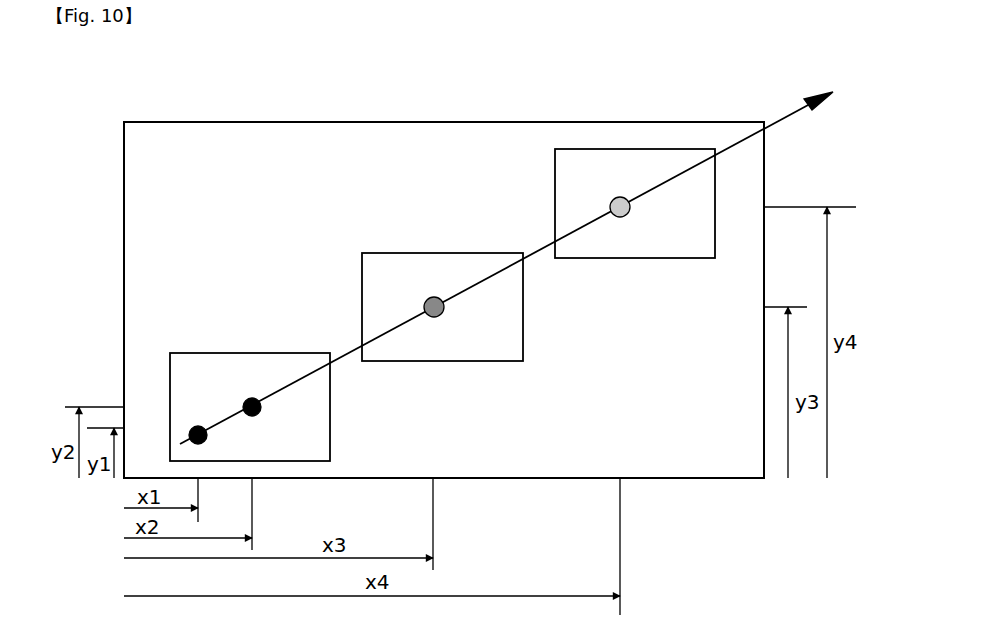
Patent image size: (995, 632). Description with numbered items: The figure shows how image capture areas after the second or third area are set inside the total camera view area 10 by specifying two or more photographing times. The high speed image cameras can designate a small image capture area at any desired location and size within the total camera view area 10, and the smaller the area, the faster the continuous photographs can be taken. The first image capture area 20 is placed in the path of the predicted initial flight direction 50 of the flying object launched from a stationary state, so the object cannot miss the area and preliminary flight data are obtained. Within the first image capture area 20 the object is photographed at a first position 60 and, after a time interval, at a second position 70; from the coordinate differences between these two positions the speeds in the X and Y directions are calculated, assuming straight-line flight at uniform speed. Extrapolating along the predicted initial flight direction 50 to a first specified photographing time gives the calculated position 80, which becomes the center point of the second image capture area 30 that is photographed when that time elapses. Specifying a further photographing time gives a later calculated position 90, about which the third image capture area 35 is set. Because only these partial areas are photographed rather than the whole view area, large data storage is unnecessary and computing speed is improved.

The total camera view area 10 is at (210, 122).
The first image capture area 20 is at (183, 353).
The second image capture area 30 is at (370, 253).
The third image capture area 35 is at (672, 149).
The predicted initial flight direction 50 is at (778, 126).
The first photographed position of the flying object 60 is at (194, 428).
The second photographed position of the flying object 70 is at (260, 412).
The calculated position of the flying object at photographing time 80 is at (434, 296).
The calculated position of the flying object at later photographing time 90 is at (620, 196).